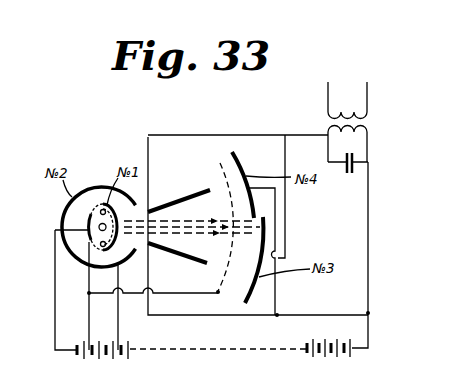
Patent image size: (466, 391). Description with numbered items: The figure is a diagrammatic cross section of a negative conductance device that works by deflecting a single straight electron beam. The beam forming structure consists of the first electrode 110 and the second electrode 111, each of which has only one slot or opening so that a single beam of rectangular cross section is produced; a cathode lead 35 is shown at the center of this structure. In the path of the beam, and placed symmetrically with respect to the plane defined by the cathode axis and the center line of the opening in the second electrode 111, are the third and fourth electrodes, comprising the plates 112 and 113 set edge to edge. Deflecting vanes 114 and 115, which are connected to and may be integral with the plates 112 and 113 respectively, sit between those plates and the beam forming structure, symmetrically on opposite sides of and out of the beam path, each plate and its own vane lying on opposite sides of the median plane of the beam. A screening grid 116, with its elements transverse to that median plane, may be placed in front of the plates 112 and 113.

The cathode lead 35 is at (90, 221).
The No. 1 electrode 110 is at (98, 203).
The No. 2 electrode 111 is at (102, 186).
The plate 112 is at (253, 289).
The plate 113 is at (240, 164).
The deflecting vane 114 is at (170, 202).
The deflecting vane 115 is at (161, 251).
The screening grid 116 is at (222, 164).